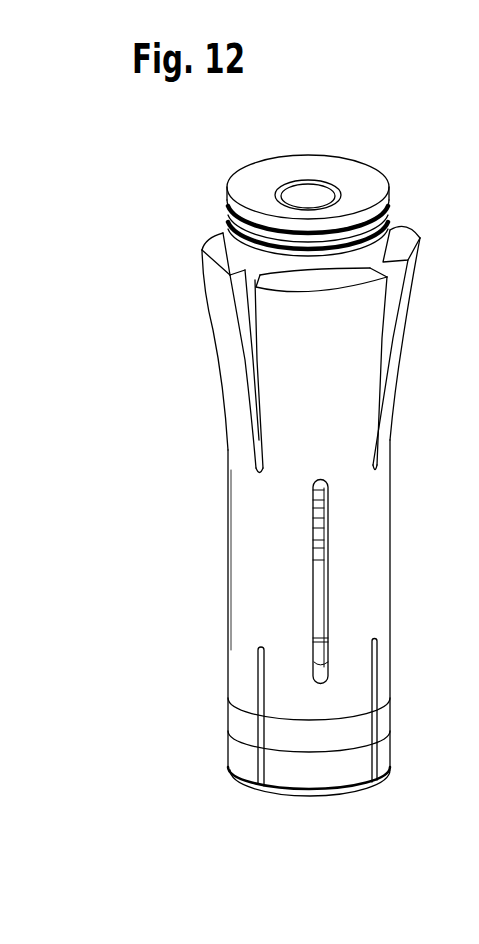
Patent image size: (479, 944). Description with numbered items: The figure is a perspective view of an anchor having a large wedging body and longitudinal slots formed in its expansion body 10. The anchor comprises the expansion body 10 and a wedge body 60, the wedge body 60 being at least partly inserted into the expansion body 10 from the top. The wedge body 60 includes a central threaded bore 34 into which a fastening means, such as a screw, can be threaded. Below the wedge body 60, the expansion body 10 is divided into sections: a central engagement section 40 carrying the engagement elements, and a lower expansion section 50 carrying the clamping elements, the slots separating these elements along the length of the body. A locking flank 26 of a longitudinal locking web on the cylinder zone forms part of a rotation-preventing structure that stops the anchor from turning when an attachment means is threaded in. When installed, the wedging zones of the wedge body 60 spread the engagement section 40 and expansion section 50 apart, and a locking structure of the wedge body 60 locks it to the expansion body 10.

The expansion body 10 is at (205, 584).
The locking flank 26 is at (243, 244).
The threaded bore 34 is at (277, 188).
The engagement section 40 is at (228, 345).
The expansion section 50 is at (204, 739).
The wedge body 60 is at (203, 203).